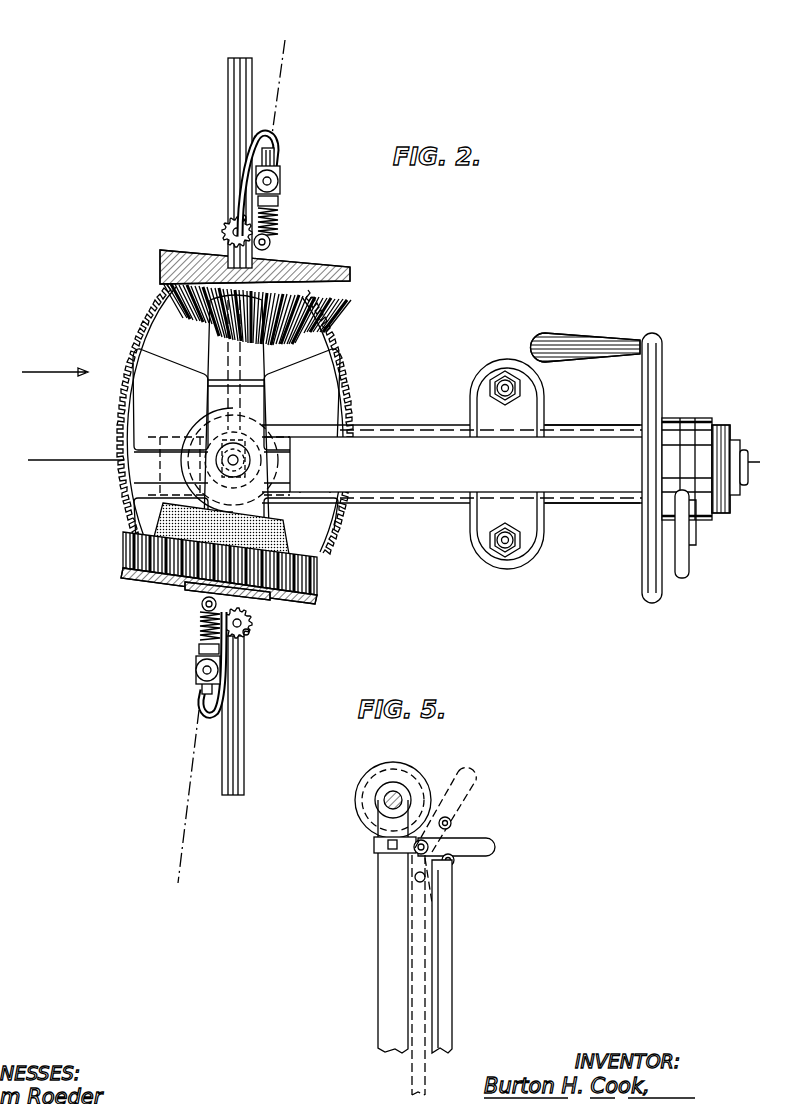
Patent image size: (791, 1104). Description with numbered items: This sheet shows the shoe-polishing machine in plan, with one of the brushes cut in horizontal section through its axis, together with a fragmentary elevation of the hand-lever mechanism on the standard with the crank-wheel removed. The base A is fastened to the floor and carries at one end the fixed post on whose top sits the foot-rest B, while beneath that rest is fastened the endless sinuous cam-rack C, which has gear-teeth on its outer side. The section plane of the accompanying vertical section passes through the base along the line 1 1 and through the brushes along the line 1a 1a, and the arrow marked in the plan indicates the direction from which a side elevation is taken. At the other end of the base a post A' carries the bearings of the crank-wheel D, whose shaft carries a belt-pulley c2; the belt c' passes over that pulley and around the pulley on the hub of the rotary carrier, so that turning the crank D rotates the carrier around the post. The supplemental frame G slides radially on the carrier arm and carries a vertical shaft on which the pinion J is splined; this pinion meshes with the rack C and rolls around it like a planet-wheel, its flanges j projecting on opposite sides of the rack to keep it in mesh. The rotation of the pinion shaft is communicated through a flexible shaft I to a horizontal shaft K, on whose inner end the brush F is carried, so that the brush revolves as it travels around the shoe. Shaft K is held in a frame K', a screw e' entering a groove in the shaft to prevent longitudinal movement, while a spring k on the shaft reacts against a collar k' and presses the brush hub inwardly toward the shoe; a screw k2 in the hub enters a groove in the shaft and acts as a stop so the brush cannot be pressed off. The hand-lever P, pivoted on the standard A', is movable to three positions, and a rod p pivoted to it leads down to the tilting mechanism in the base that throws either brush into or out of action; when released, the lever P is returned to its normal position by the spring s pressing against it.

In FIG. 2, the line 1 1 is at (389, 461).
In FIG. 2, the line 1a 1a is at (238, 456).
In FIG. 2, the spring s is at (55, 365).
In FIG. 5, the spring s is at (412, 905).
In FIG. 2, the base A is at (461, 464).
In FIG. 5, the post A' is at (385, 926).
In FIG. 2, the foot-rest B is at (258, 400).
In FIG. 2, the cam-rack C is at (128, 398).
In FIG. 2, the crank-wheel D is at (597, 459).
In FIG. 2, the brush F is at (332, 272).
In FIG. 2, the supplemental frame G is at (245, 741).
In FIG. 2, the flexible shaft I is at (270, 136).
In FIG. 2, the pinion J is at (222, 232).
In FIG. 2, the flanges j is at (232, 216).
In FIG. 2, the horizontal shaft K is at (228, 425).
In FIG. 2, the frame K' is at (232, 425).
In FIG. 2, the spring k is at (241, 424).
In FIG. 2, the collar k' is at (233, 427).
In FIG. 2, the screw k2 is at (270, 242).
In FIG. 2, the screw e' is at (235, 423).
In FIG. 2, the belt c' is at (592, 468).
In FIG. 2, the belt-pulley c2 is at (728, 438).
In FIG. 5, the belt-pulley c2 is at (428, 785).
In FIG. 2, the rod p is at (689, 527).
In FIG. 5, the rod p is at (445, 978).
In FIG. 5, the hand-lever P is at (476, 836).